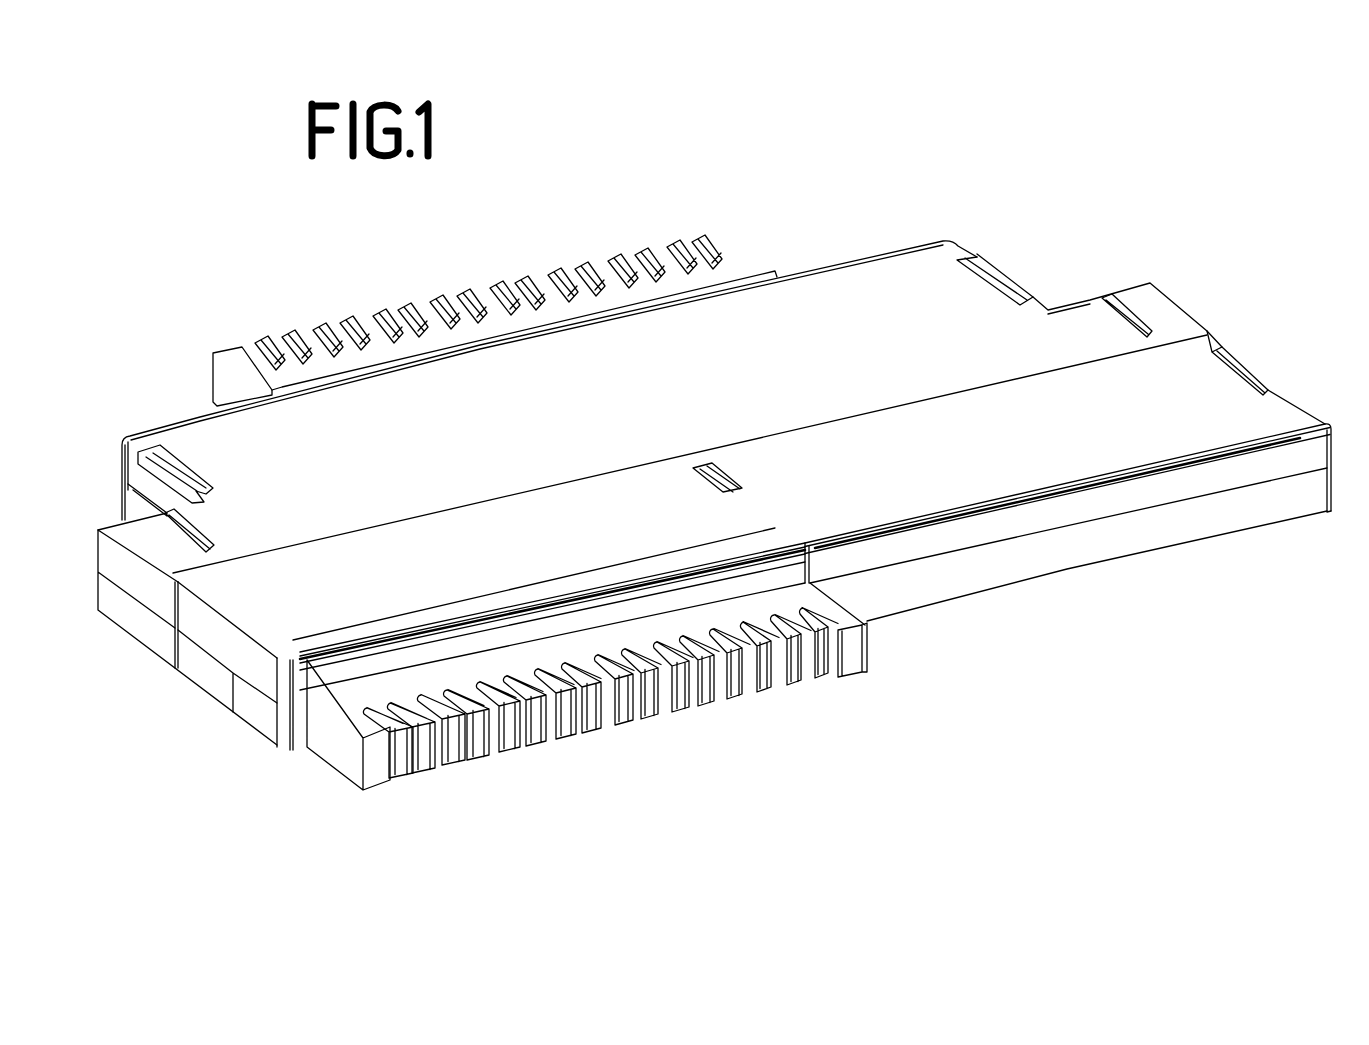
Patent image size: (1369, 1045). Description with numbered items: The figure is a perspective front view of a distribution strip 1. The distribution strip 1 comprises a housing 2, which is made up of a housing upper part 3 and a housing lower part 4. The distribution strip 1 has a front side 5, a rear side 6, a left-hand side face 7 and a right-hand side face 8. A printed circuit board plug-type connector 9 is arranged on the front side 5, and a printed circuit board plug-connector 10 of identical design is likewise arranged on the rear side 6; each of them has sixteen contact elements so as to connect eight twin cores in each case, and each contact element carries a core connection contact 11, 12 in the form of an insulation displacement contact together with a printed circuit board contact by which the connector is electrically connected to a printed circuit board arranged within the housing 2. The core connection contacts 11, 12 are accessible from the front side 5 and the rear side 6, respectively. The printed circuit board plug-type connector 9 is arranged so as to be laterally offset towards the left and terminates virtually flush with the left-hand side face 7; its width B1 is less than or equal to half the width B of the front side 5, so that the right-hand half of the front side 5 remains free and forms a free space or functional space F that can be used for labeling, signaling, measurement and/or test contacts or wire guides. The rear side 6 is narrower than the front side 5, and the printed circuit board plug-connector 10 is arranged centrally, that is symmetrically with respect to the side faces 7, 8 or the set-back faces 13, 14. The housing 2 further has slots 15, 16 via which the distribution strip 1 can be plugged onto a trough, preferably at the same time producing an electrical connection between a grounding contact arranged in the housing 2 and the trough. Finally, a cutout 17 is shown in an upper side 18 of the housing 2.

The distribution strip 1 is at (1051, 219).
The housing 2 is at (1305, 416).
The housing upper part 3 is at (1312, 456).
The housing lower part 4 is at (1312, 500).
The front side 5 is at (933, 587).
The rear side 6 is at (183, 420).
The left-hand side face 7 is at (157, 632).
The right-hand side face 8 is at (1178, 306).
The printed circuit board plug-type connector 9 is at (340, 745).
The printed circuit board plug-connector 10 is at (237, 357).
The core connection contact 11 is at (634, 712).
The core connection contact 12 is at (640, 274).
The set-back face 13 is at (143, 478).
The set-back face 14 is at (995, 285).
The slot 15 is at (150, 537).
The slot 16 is at (1126, 300).
The cutout 17 is at (716, 484).
The upper side 18 is at (870, 322).
The width of the front side B is at (630, 468).
The width of the printed circuit board plug-type connector B1 is at (555, 584).
The functional space F is at (1063, 565).